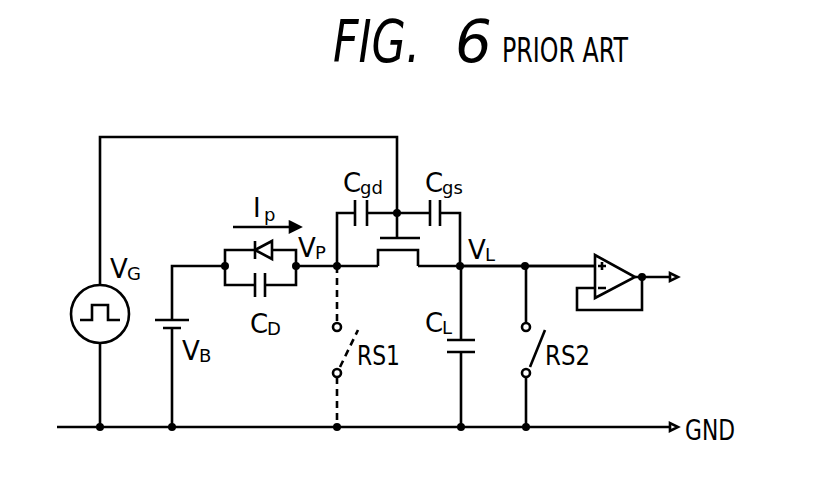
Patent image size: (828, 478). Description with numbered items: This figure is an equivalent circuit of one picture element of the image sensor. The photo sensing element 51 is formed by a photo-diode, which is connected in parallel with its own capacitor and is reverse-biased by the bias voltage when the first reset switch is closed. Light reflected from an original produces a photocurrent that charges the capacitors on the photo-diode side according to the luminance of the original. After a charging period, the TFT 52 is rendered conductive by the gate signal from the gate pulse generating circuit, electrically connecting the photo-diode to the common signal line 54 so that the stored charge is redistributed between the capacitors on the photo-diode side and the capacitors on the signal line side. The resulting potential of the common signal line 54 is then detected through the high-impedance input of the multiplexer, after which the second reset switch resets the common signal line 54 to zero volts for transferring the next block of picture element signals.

The photo sensing element 51 is at (248, 295).
The TFT 52 is at (406, 222).
The common signal line 54 is at (507, 263).